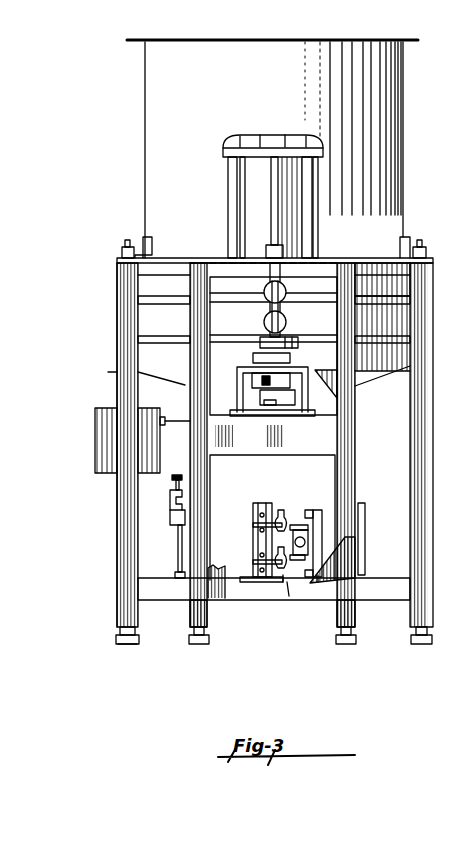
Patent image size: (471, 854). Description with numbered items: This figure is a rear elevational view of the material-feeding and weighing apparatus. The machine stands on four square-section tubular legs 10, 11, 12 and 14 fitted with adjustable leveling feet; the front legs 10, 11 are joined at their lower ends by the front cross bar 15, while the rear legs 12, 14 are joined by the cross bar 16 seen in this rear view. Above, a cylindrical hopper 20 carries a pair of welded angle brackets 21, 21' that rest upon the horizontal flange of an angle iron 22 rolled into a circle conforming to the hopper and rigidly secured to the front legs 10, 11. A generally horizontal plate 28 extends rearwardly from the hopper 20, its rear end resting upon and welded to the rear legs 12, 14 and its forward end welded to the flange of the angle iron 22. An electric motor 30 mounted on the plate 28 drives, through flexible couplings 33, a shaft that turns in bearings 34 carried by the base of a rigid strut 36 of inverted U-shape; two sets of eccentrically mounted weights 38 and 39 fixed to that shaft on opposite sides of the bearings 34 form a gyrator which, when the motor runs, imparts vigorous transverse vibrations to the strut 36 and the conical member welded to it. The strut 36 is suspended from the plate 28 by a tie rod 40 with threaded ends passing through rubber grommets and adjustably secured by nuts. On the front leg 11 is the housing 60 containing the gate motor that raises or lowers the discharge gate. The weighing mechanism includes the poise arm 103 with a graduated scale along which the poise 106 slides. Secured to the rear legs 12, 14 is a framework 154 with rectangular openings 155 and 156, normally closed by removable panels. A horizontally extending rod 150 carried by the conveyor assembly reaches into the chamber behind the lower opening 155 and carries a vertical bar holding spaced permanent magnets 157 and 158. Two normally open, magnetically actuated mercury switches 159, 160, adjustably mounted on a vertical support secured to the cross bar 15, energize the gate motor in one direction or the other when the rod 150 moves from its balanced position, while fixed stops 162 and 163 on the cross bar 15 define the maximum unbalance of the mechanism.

The tubular leg 10 is at (433, 300).
The tubular leg 11 is at (115, 551).
The tubular leg 12 is at (357, 612).
The tubular leg 14 is at (188, 612).
The front cross bar 15 is at (148, 588).
The cross bar 16 is at (236, 597).
The cylindrical hopper 20 is at (404, 122).
The angle bracket 21 is at (130, 229).
The angle bracket 21' is at (424, 226).
The angle iron 22 is at (377, 268).
The horizontal plate 28 is at (323, 263).
The electric motor 30 is at (229, 184).
The flexible couplings 33 is at (287, 326).
The bearings 34 is at (250, 380).
The rigid strut 36 is at (309, 396).
The eccentrically-mounted weights 38 is at (299, 346).
The eccentrically-mounted weights 39 is at (292, 403).
The tie rod 40 is at (263, 322).
The housing 60 is at (100, 408).
The poise arm 103 is at (170, 503).
The poise 106 is at (170, 520).
The horizontally-extending rod 150 is at (308, 541).
The framework 154 is at (348, 479).
The rectangular opening 155 is at (328, 500).
The rectangular opening 156 is at (318, 407).
The permanent magnet 157 is at (289, 596).
The permanent magnet 158 is at (291, 580).
The magnetically-actuated mercury switch 159 is at (279, 508).
The magnetically-actuated mercury switch 160 is at (283, 575).
The fixed stop 162 is at (318, 576).
The fixed stop 163 is at (306, 512).